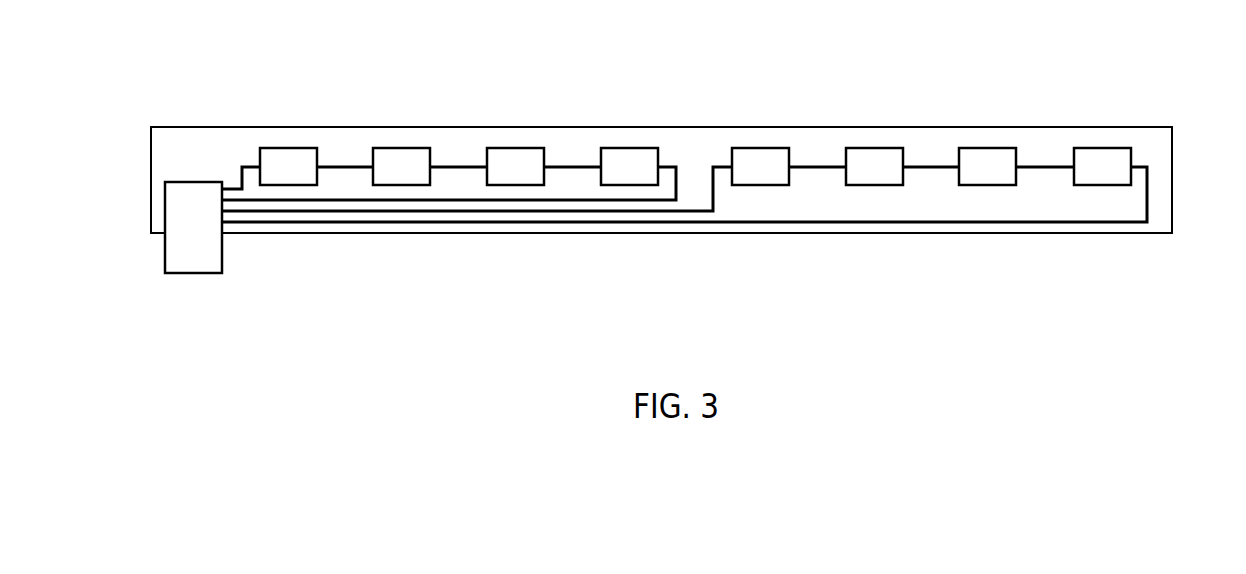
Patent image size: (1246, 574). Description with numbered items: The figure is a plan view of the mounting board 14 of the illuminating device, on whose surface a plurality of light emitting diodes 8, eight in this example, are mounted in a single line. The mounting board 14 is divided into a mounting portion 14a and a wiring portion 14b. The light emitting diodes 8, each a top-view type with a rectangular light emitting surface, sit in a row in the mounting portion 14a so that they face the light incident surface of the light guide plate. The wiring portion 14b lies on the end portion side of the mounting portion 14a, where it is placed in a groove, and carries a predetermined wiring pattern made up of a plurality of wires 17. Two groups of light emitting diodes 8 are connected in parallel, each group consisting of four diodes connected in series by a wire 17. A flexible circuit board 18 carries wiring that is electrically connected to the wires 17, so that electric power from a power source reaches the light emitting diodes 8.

The light emitting diode 8 is at (385, 163).
The mounting board 14 is at (1142, 136).
The mounting portion 14a is at (1183, 147).
The wiring portion 14b is at (1183, 188).
The wire 17 is at (557, 201).
The flexible circuit board 18 is at (193, 255).